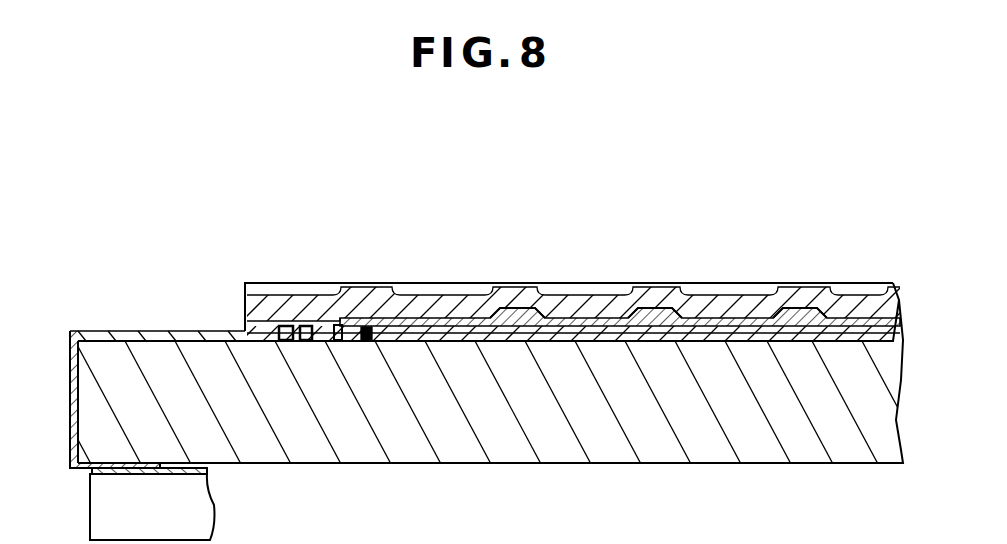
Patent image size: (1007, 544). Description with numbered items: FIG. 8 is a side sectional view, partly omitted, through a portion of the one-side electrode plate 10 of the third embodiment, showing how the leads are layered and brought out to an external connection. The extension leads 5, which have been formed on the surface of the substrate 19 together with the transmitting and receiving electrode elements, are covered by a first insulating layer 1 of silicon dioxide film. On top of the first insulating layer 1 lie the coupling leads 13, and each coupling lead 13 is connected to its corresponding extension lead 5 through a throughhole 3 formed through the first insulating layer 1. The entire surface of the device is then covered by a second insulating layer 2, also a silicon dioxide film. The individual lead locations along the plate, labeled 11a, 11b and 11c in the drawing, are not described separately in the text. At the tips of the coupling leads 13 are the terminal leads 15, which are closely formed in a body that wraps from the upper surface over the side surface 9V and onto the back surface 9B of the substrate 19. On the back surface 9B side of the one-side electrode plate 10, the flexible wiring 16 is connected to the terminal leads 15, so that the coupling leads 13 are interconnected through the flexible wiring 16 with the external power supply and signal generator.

The first insulating layer 1 is at (326, 338).
The second insulating layer 2 is at (257, 303).
The throughholes 3 is at (352, 310).
The extension leads 5 is at (366, 342).
The side surface 9V is at (84, 388).
The back surface 9B is at (240, 470).
The one-side electrode plate 10 is at (628, 206).
The electrode bump a 11a is at (553, 306).
The electrode bump b 11b is at (697, 306).
The electrode bump c 11c is at (846, 293).
The coupling leads 13 is at (462, 318).
The terminal leads 15 is at (128, 331).
The flexible wiring 16 is at (108, 504).
The substrate 19 is at (568, 455).